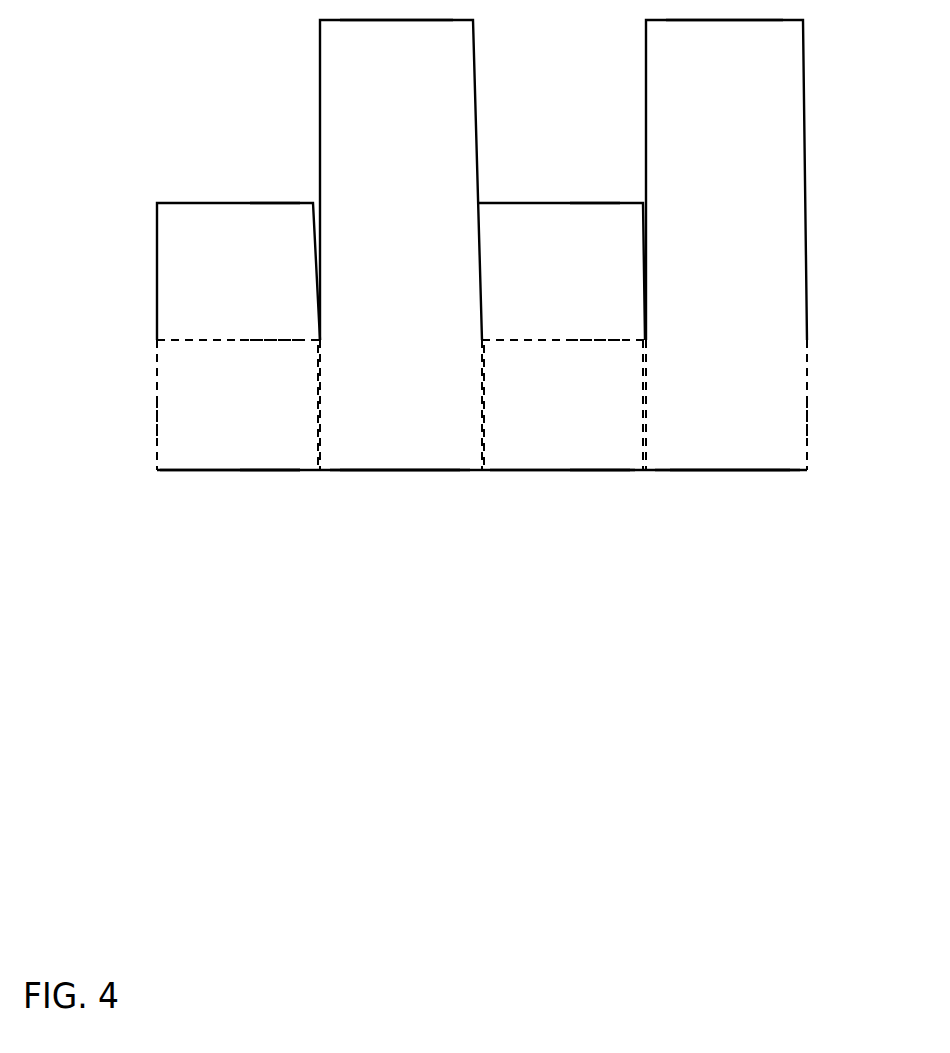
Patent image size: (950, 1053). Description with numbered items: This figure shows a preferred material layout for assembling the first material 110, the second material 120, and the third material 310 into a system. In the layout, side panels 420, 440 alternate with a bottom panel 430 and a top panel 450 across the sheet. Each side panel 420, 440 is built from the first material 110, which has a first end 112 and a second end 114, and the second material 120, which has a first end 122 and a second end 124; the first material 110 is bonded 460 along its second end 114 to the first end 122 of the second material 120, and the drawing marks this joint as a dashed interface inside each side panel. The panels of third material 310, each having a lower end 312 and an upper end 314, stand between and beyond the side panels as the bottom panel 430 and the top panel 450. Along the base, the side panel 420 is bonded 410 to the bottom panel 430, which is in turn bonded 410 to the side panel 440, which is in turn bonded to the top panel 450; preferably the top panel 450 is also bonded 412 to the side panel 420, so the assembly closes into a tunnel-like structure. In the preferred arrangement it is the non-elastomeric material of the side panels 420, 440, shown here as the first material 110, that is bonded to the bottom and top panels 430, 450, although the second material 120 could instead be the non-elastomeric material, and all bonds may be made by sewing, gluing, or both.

The first material 110 is at (188, 402).
The first end of first material 112 is at (264, 458).
The second end of first material 114 is at (264, 352).
The second material 120 is at (193, 257).
The first end of second material 122 is at (276, 330).
The second end of second material 124 is at (278, 214).
The third material 310 is at (374, 287).
The end of third material 312 is at (398, 458).
The end of third material 314 is at (398, 32).
The bond 410 is at (308, 456).
The bond 412 is at (146, 419).
The side panel 420 is at (224, 498).
The bottom panel 430 is at (384, 500).
The side panel 440 is at (547, 500).
The top panel 450 is at (728, 500).
The bond 460 is at (219, 340).